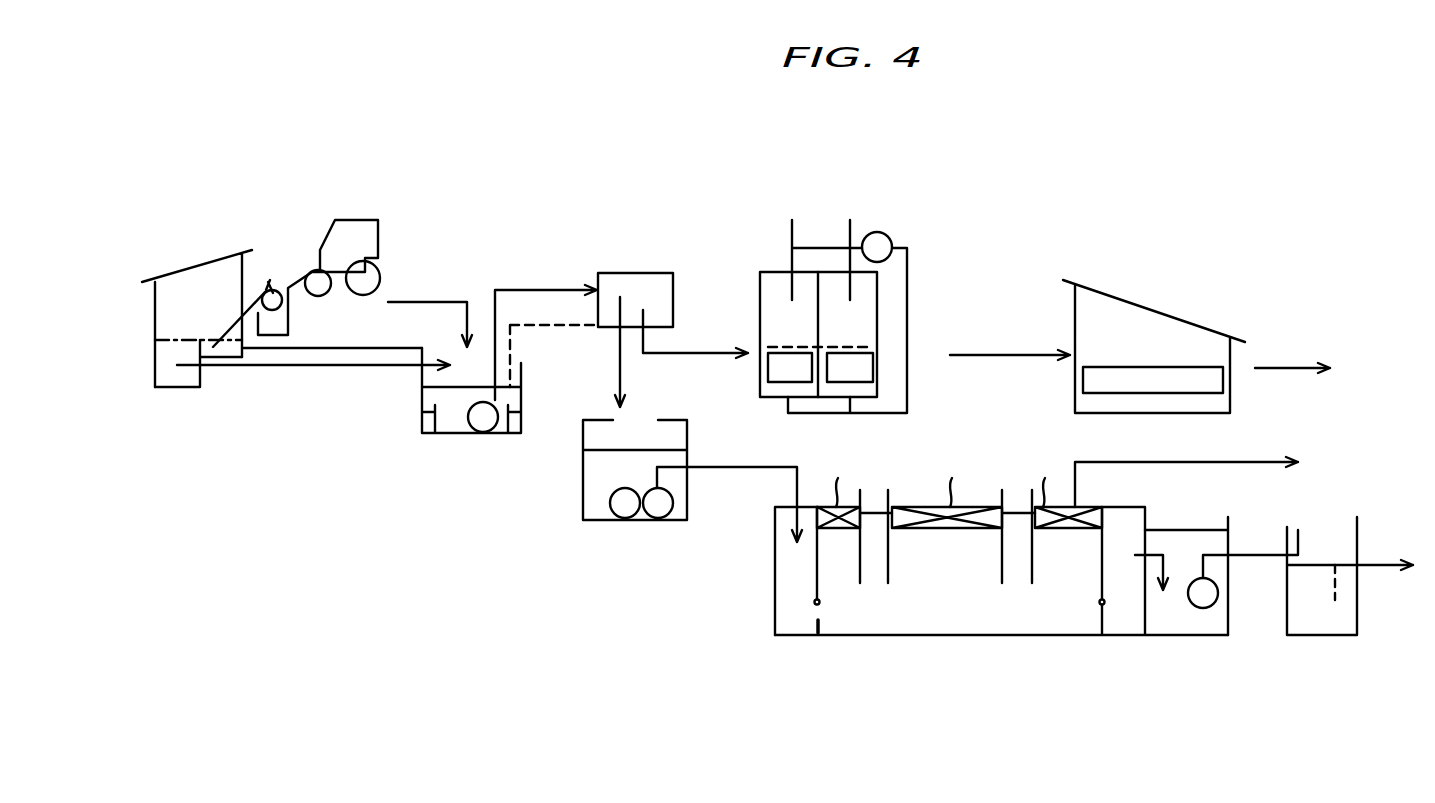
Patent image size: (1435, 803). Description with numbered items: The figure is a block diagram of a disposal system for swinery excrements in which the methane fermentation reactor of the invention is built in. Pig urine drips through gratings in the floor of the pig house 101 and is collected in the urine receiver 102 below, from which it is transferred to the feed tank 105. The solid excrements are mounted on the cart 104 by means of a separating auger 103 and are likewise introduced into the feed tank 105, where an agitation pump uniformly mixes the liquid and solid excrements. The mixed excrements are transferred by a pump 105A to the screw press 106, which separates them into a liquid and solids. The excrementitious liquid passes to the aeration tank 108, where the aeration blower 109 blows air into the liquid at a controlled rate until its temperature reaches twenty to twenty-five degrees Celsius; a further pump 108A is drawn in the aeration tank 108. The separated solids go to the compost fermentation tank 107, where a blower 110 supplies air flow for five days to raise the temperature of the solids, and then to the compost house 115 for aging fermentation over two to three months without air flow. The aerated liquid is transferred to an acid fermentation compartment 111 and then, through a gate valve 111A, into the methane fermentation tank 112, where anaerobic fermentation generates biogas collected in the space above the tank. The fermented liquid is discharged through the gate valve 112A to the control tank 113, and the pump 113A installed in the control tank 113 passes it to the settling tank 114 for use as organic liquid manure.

The pig house 101 is at (197, 258).
The urine receiver 102 is at (180, 378).
The separating auger 103 is at (272, 280).
The cart 104 is at (355, 220).
The feed tank 105 is at (447, 433).
The pump 105A is at (485, 420).
The screw press 106 is at (642, 273).
The compost fermentation tank 107 is at (758, 300).
The aeration tank 108 is at (580, 495).
The pump 108A is at (667, 505).
The aeration blower 109 is at (625, 510).
The blower 110 is at (878, 238).
The acid fermentation compartment 111 is at (793, 593).
The gate valve 111A is at (819, 605).
The methane fermentation tank 112 is at (947, 637).
The gate valve 112A is at (1104, 605).
The control tank 113 is at (1228, 612).
The pump 113A is at (1200, 607).
The settling tank 114 is at (1357, 603).
The compost house 115 is at (1158, 308).